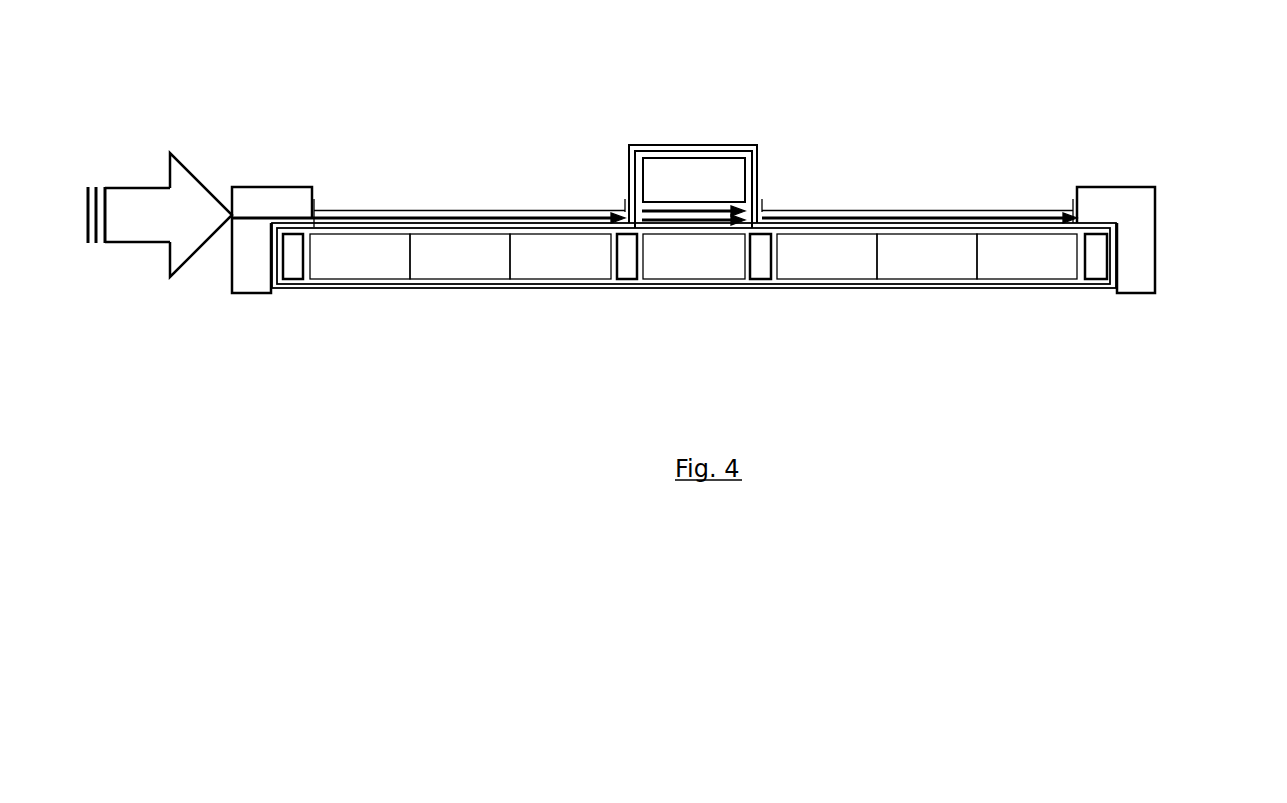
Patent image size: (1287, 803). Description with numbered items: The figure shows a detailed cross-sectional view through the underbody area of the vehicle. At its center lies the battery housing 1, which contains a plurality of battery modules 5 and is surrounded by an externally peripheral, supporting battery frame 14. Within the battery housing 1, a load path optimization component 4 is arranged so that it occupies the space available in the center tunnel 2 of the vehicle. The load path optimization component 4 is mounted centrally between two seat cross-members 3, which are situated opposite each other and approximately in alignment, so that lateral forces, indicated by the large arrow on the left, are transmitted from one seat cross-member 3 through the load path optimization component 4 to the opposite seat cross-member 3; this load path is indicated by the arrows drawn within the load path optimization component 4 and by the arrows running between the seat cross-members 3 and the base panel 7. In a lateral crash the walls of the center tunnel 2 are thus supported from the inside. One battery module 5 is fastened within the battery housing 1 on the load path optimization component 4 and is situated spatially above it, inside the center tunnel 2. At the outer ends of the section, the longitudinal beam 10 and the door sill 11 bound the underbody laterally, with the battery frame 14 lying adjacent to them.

The battery housing 1 is at (730, 295).
The center tunnel 2 is at (703, 134).
The seat cross-member 3 is at (899, 199).
The load path optimization component 4 is at (750, 198).
The battery module 5 is at (656, 163).
The base panel 7 is at (1030, 212).
The longitudinal beam 10 is at (622, 292).
The door sill 11 is at (1162, 176).
The battery frame 14 is at (1108, 278).